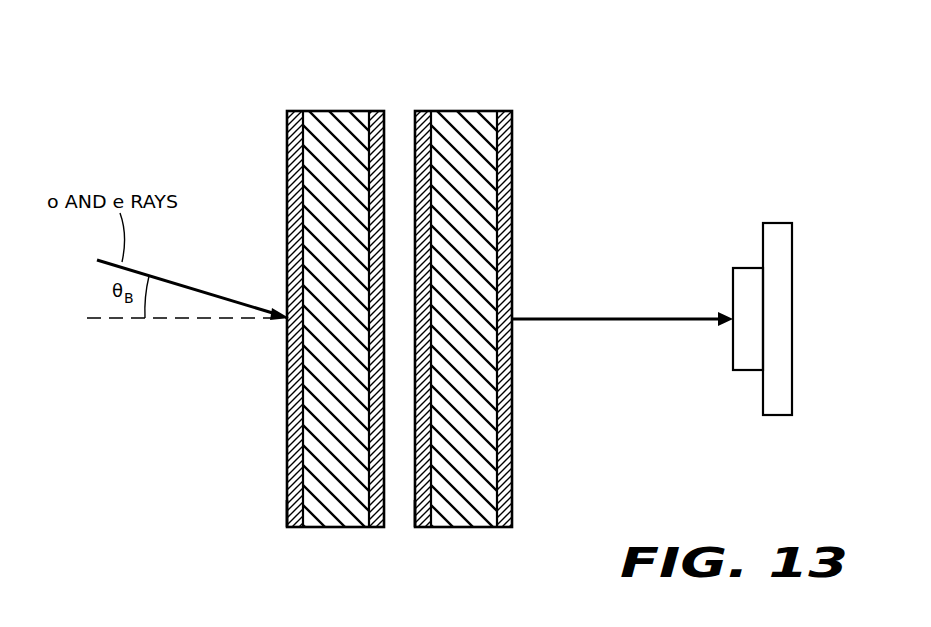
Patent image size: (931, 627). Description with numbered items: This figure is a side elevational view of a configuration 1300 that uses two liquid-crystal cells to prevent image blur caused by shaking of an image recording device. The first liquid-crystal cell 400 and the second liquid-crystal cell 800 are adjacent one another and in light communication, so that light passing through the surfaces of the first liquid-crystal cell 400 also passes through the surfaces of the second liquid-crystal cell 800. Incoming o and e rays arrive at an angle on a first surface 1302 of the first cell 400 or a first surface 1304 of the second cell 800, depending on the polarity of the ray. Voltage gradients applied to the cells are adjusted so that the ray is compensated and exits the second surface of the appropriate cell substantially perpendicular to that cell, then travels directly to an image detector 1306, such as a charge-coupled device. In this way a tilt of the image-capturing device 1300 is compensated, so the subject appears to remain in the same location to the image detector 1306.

The first liquid-crystal cell 400 is at (333, 111).
The second liquid-crystal cell 800 is at (466, 111).
The configuration 1300 is at (528, 578).
The first surface of the first cell 1302 is at (288, 505).
The first surface of the second cell 1304 is at (416, 505).
The image detector 1306 is at (765, 393).